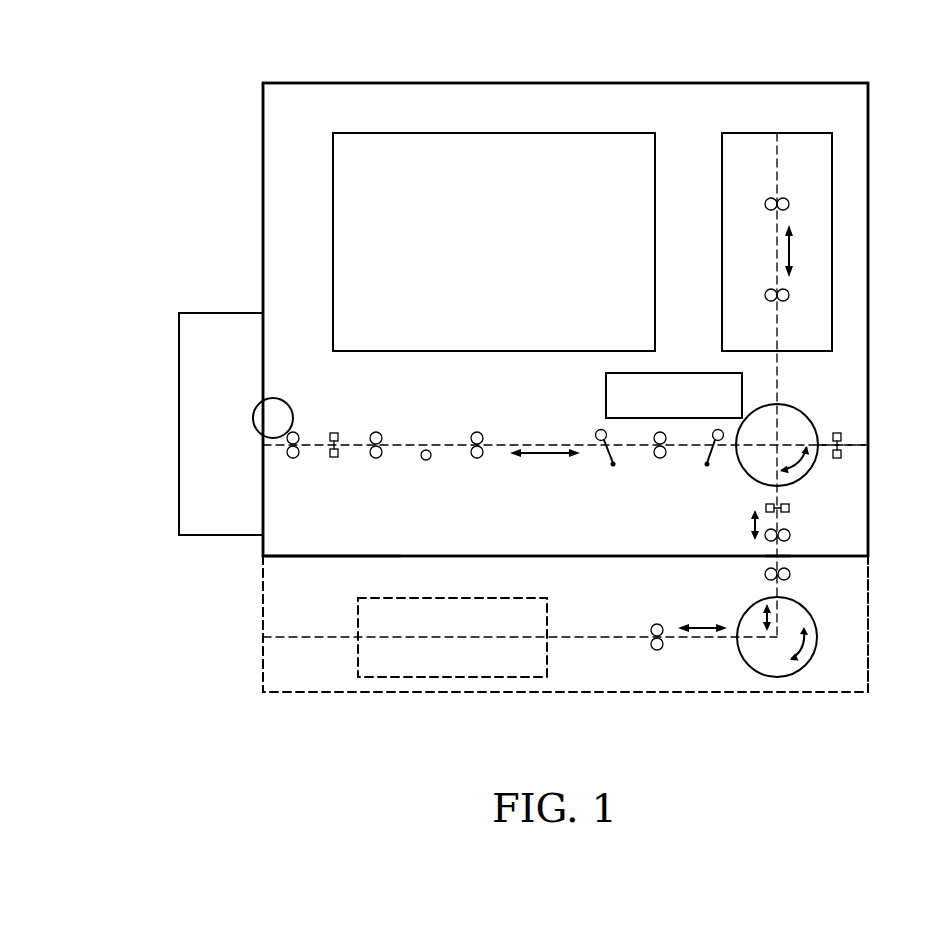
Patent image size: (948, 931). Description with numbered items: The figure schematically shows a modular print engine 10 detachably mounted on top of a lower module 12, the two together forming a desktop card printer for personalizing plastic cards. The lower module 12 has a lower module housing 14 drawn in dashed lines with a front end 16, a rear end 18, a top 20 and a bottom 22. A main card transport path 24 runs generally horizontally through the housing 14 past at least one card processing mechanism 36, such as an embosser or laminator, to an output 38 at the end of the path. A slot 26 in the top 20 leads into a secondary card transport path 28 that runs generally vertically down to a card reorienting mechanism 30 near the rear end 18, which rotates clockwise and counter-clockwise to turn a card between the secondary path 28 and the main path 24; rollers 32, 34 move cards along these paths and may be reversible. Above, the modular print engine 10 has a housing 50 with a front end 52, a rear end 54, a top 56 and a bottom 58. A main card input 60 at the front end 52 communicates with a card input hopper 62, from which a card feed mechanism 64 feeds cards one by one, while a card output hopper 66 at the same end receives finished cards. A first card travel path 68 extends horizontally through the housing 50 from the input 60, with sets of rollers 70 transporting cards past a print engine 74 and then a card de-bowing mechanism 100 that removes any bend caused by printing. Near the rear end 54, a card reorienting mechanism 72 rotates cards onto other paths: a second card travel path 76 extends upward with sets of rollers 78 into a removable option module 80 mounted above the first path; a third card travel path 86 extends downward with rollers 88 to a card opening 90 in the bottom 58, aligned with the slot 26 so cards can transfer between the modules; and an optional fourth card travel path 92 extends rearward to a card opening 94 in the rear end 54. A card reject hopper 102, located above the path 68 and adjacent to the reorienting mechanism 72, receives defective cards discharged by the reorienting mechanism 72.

The modular print engine 10 is at (178, 160).
The lower module 12 is at (238, 603).
The lower module housing 14 is at (885, 590).
The front end 16 is at (263, 575).
The rear end 18 is at (868, 637).
The top 20 is at (300, 557).
The bottom 22 is at (315, 692).
The main card transport path 24 is at (627, 637).
The slot 26 is at (768, 564).
The secondary card transport path 28 is at (772, 596).
The card reorienting mechanism 30 is at (812, 638).
The rollers 32 is at (657, 623).
The rollers 34 is at (764, 574).
The card processing mechanism 36 is at (547, 620).
The output 38 is at (263, 637).
The housing 50 is at (350, 75).
The front end 52 is at (263, 128).
The rear end 54 is at (868, 248).
The top 56 is at (398, 83).
The bottom 58 is at (423, 556).
The main card input 60 is at (263, 445).
The card input hopper 62 is at (195, 340).
The card feed mechanism 64 is at (283, 405).
The card output hopper 66 is at (195, 518).
The first card travel path 68 is at (503, 448).
The sets of rollers 70 is at (295, 460).
The card reorienting mechanism 72 is at (810, 472).
The print engine 74 is at (655, 240).
The second card travel path 76 is at (781, 377).
The sets of rollers 78 is at (790, 204).
The removable option module 80 is at (722, 170).
The third card travel path 86 is at (775, 503).
The rollers 88 is at (792, 535).
The card opening 90 is at (788, 560).
The fourth card travel path 92 is at (835, 436).
The card opening 94 is at (868, 445).
The card de-bowing mechanism 100 is at (596, 440).
The card reject hopper 102 is at (606, 393).